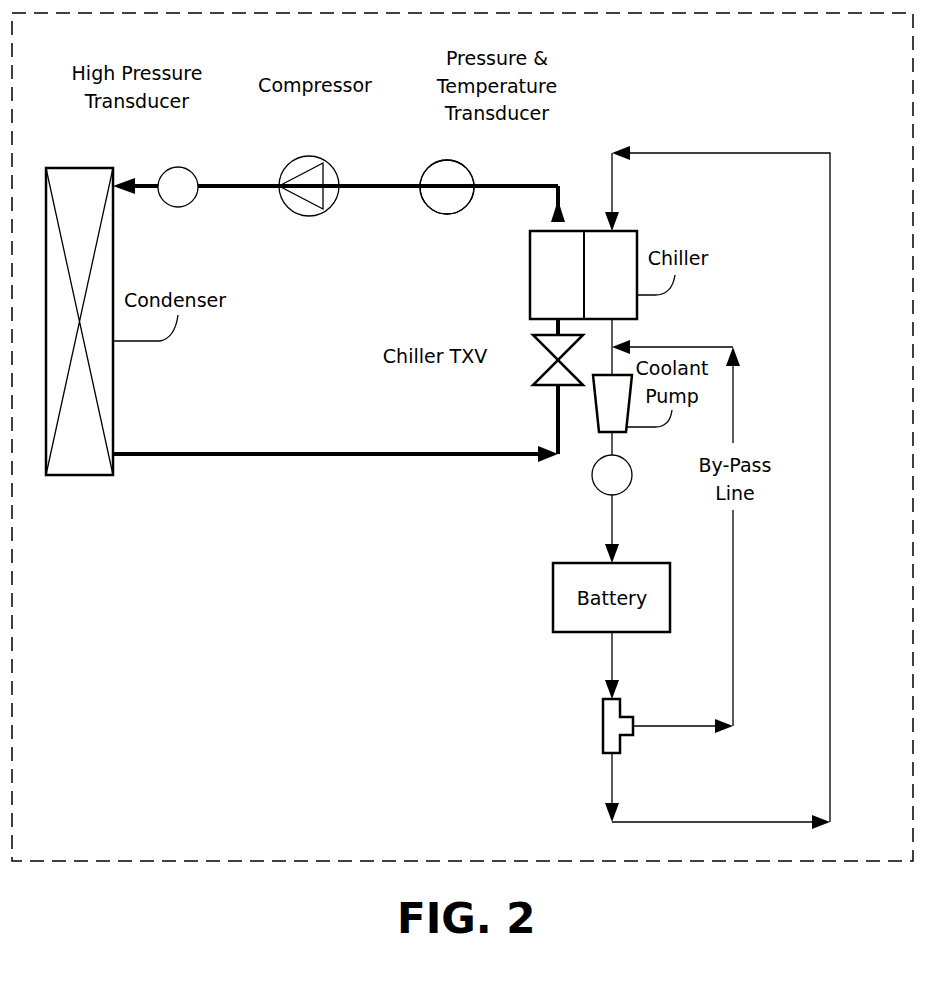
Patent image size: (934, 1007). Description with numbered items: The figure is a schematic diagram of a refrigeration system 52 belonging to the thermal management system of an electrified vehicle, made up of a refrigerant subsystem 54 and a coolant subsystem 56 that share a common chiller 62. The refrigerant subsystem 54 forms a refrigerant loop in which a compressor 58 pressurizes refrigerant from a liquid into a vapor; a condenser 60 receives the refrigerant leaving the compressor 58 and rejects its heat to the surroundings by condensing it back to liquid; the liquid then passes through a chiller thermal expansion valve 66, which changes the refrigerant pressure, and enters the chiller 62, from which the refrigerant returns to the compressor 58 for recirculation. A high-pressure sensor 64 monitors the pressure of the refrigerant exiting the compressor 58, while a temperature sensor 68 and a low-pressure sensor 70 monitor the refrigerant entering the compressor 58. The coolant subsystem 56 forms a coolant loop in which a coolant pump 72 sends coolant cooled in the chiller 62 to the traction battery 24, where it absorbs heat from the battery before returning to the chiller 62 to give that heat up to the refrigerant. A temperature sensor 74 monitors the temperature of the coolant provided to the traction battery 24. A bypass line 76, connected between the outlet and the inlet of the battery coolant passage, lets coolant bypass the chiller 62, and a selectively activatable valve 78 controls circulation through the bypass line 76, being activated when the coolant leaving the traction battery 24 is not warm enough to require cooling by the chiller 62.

The traction battery 24 is at (553, 615).
The refrigeration system 52 is at (282, 535).
The refrigerant subsystem 54 is at (339, 320).
The coolant subsystem 56 is at (717, 487).
The compressor 58 is at (309, 216).
The condenser 60 is at (113, 406).
The chiller 62 is at (530, 297).
The high-pressure sensor 64 is at (178, 208).
The chiller thermal expansion valve 66 is at (548, 389).
The temperature sensor 68 is at (447, 214).
The low-pressure sensor 70 is at (447, 187).
The coolant pump 72 is at (598, 433).
The temperature sensor 74 is at (600, 494).
The bypass line 76 is at (733, 423).
The selectively activatable valve 78 is at (603, 733).